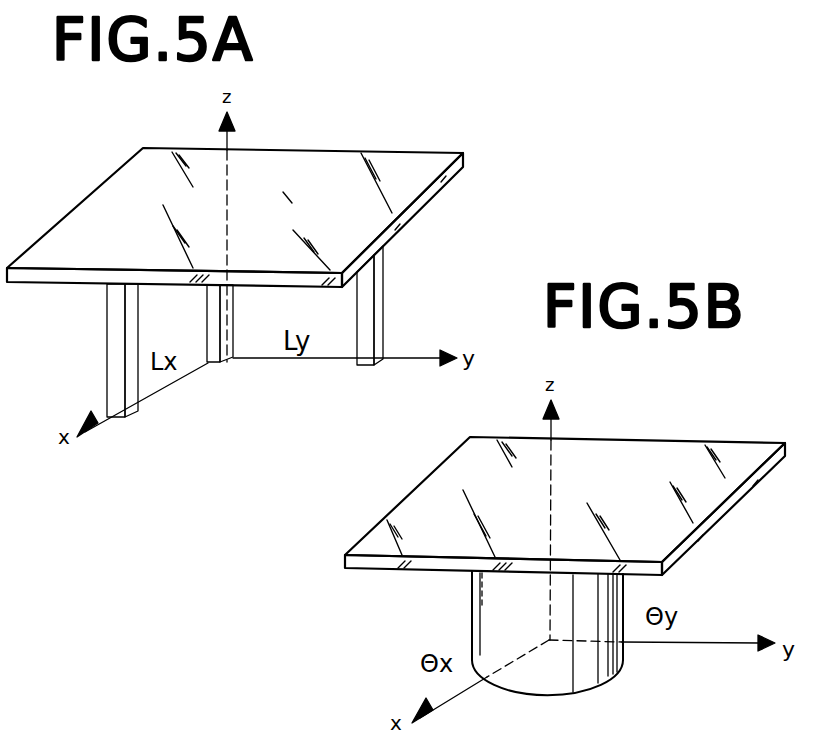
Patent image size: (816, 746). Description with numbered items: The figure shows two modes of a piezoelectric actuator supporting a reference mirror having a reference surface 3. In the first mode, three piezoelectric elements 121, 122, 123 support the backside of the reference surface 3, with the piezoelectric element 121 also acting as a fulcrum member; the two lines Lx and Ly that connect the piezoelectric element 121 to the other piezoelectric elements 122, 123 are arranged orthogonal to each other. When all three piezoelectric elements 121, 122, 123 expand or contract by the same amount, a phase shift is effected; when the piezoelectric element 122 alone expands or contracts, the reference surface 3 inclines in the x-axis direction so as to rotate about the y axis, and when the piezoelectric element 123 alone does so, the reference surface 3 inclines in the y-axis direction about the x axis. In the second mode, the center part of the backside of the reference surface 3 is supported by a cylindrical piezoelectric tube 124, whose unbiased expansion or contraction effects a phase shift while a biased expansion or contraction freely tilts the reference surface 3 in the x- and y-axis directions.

In FIG. 5A, the reference surface (reference mirror) 3 is at (403, 160).
In FIG. 5B, the reference surface (reference mirror) 3 is at (697, 450).
In FIG. 5A, the piezoelectric element 121 is at (223, 365).
In FIG. 5A, the piezoelectric element 122 is at (137, 415).
In FIG. 5A, the piezoelectric element 123 is at (380, 310).
In FIG. 5B, the cylindrical piezoelectric tube 124 is at (612, 675).